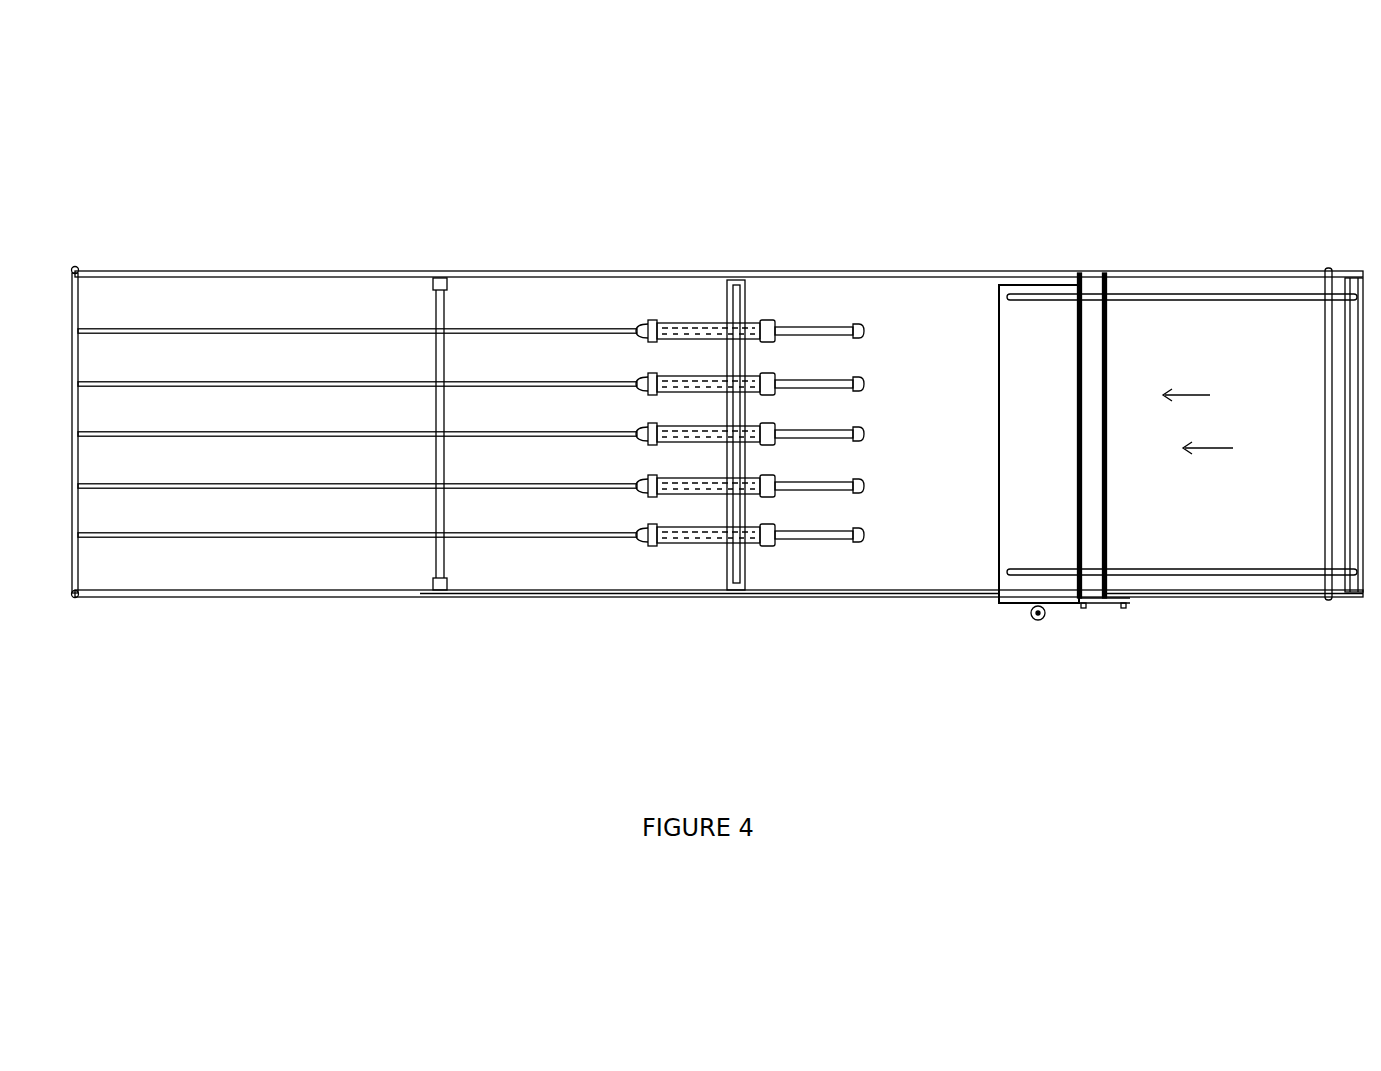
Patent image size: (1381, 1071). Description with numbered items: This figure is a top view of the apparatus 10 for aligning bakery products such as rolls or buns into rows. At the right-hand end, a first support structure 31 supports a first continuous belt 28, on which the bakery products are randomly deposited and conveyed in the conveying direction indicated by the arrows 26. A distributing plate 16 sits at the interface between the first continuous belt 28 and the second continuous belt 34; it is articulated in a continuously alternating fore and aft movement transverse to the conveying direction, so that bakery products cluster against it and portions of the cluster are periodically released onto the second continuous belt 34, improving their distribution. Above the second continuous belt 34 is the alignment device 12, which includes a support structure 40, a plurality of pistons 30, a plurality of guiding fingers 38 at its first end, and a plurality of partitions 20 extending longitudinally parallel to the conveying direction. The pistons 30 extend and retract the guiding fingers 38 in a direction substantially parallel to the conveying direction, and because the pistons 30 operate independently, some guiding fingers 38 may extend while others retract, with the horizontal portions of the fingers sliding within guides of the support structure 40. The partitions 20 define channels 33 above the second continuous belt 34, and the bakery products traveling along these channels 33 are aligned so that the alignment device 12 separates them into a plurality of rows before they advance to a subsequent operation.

The apparatus 10 is at (996, 105).
The alignment device 12 is at (718, 354).
The distributing plate 16 is at (1053, 510).
The partitions 20 is at (357, 416).
The arrows 26 is at (1182, 375).
The first continuous belt 28 is at (1182, 265).
The pistons 30 is at (762, 424).
The first support structure 31 is at (1235, 648).
The channels 33 is at (228, 403).
The second continuous belt 34 is at (710, 648).
The guiding fingers 38 is at (916, 379).
The support structure 40 is at (686, 482).